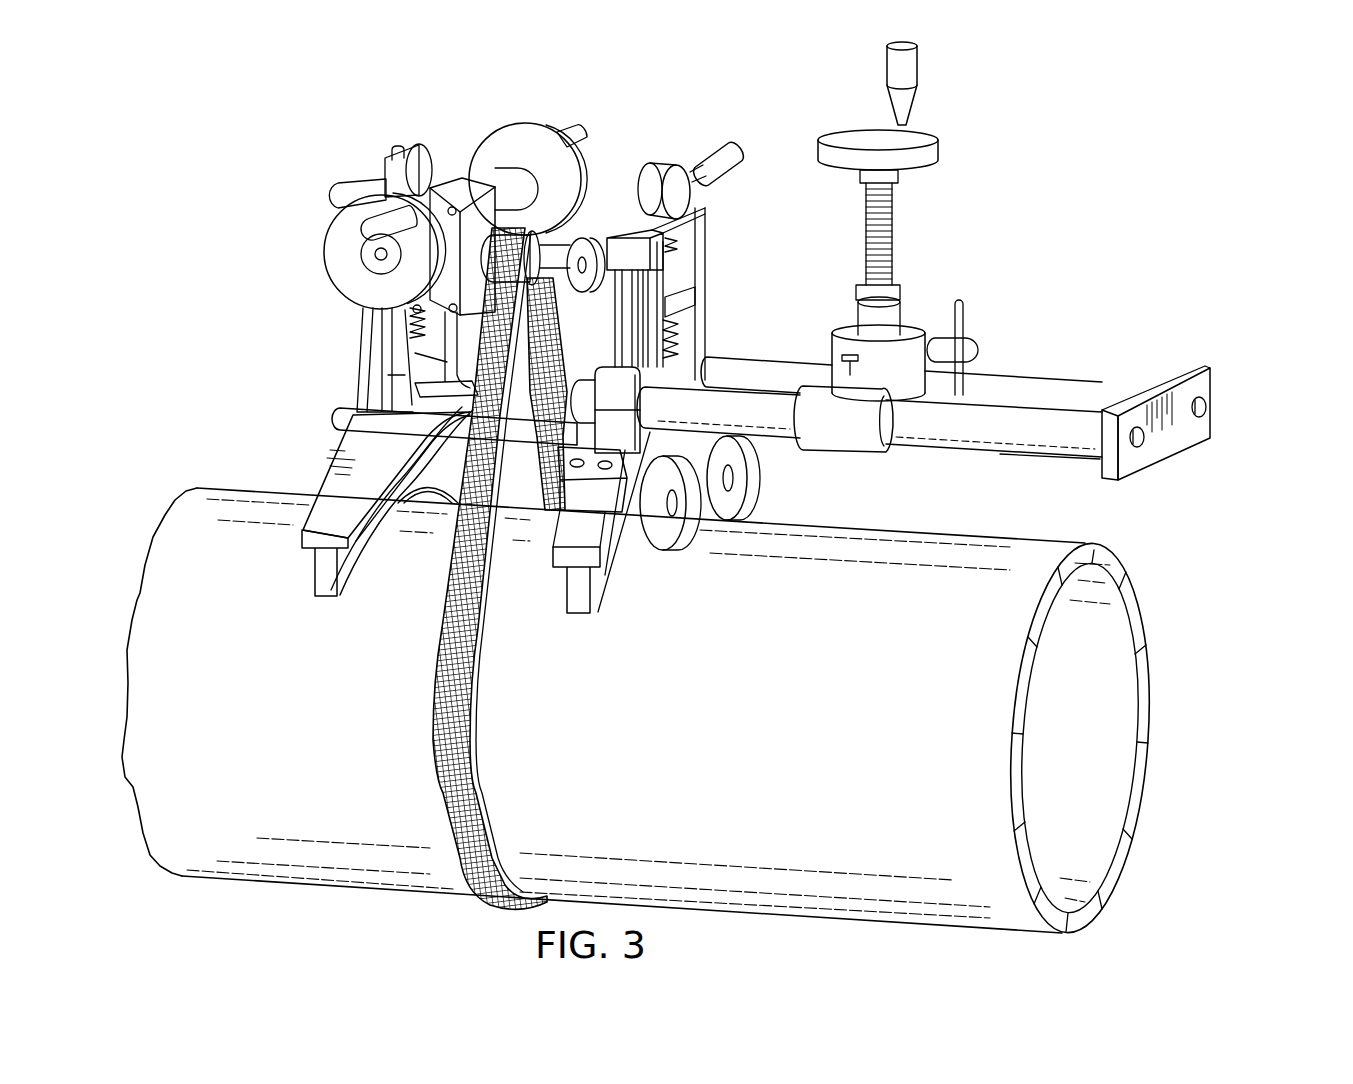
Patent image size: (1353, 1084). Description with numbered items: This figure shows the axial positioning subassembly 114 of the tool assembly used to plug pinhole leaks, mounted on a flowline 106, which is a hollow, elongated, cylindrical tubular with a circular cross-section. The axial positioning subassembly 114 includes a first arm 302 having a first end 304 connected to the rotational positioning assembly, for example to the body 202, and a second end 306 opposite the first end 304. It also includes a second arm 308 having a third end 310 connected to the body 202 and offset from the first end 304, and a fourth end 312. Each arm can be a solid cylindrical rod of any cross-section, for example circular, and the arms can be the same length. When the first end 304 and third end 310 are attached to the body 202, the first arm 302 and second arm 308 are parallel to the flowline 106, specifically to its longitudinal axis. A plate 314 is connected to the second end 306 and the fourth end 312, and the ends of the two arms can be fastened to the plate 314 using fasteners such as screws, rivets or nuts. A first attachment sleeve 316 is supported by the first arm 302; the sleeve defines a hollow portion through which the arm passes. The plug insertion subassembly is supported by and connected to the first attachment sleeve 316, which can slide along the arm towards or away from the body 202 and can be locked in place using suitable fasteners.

The flowline 106 is at (257, 488).
The body 202 is at (353, 422).
The axial positioning subassembly 114 is at (1014, 263).
The first arm 302 is at (978, 457).
The first end 304 is at (733, 403).
The second end 306 is at (1058, 454).
The second arm 308 is at (1040, 375).
The third end 310 is at (793, 370).
The fourth end 312 is at (1120, 390).
The plate 314 is at (1212, 383).
The first attachment sleeve 316 is at (830, 452).